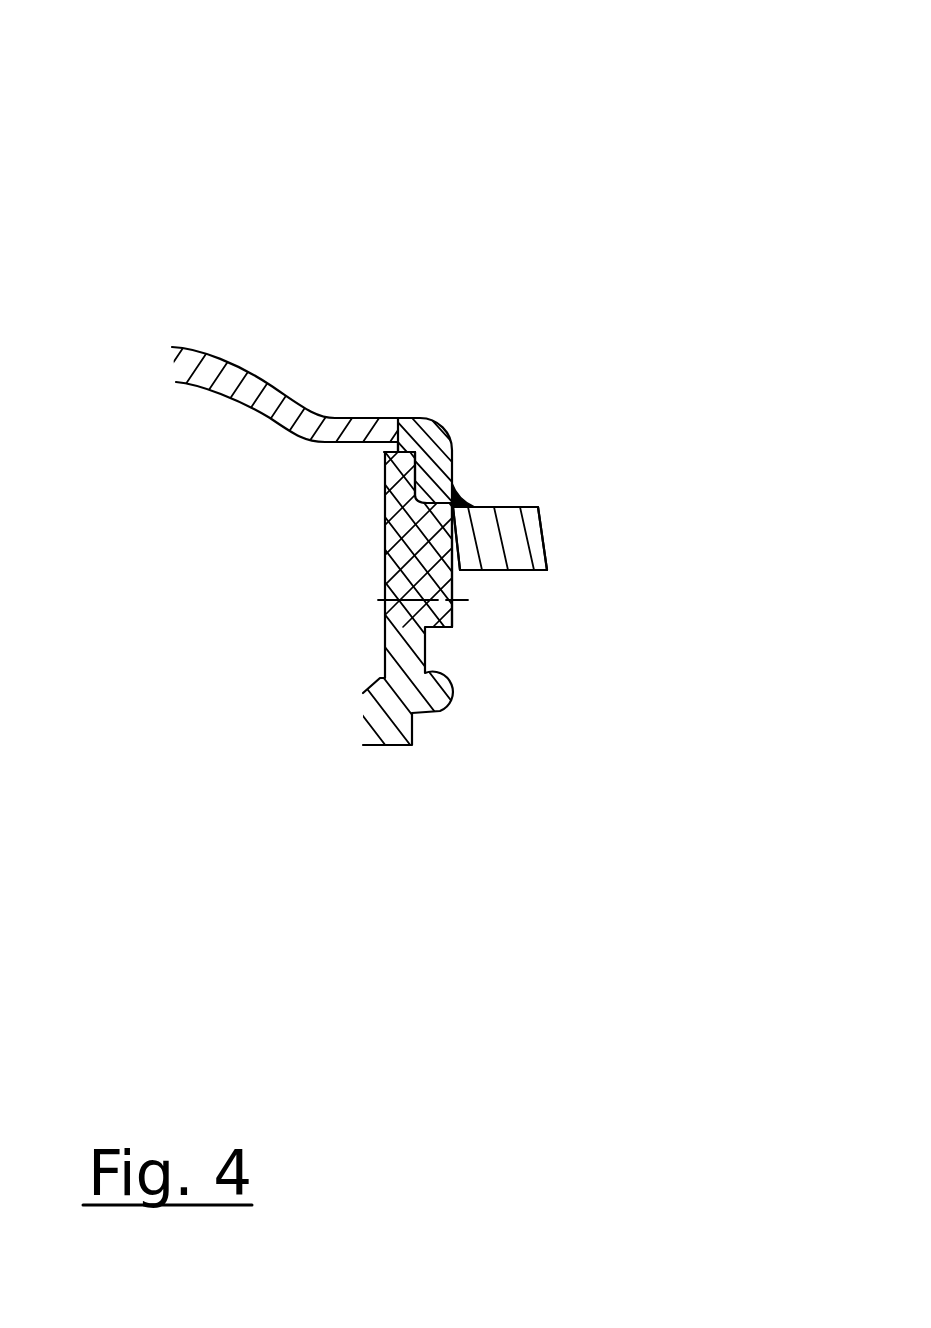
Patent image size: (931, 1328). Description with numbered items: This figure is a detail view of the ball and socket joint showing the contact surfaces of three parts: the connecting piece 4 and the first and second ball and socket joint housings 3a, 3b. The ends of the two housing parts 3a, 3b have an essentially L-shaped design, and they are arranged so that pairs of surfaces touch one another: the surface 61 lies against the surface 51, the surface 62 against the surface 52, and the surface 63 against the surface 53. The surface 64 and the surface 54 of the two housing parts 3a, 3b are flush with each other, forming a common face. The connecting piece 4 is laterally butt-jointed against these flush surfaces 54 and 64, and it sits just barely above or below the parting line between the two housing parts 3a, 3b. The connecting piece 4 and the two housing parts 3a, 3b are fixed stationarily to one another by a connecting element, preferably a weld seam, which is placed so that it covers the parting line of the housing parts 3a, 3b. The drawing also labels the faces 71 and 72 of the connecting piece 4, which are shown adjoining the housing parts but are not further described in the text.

The first ball and socket joint housing 3a is at (385, 748).
The second ball and socket joint housing 3b is at (258, 362).
The connecting piece 4 is at (481, 497).
The surface 51 is at (395, 446).
The surface 52 is at (417, 475).
The surface 53 is at (452, 492).
The surface 54 is at (385, 601).
The surface 61 is at (402, 440).
The surface 62 is at (416, 452).
The surface 63 is at (435, 500).
The surface 64 is at (457, 485).
The first flange face 71 is at (540, 510).
The second flange face 72 is at (453, 542).